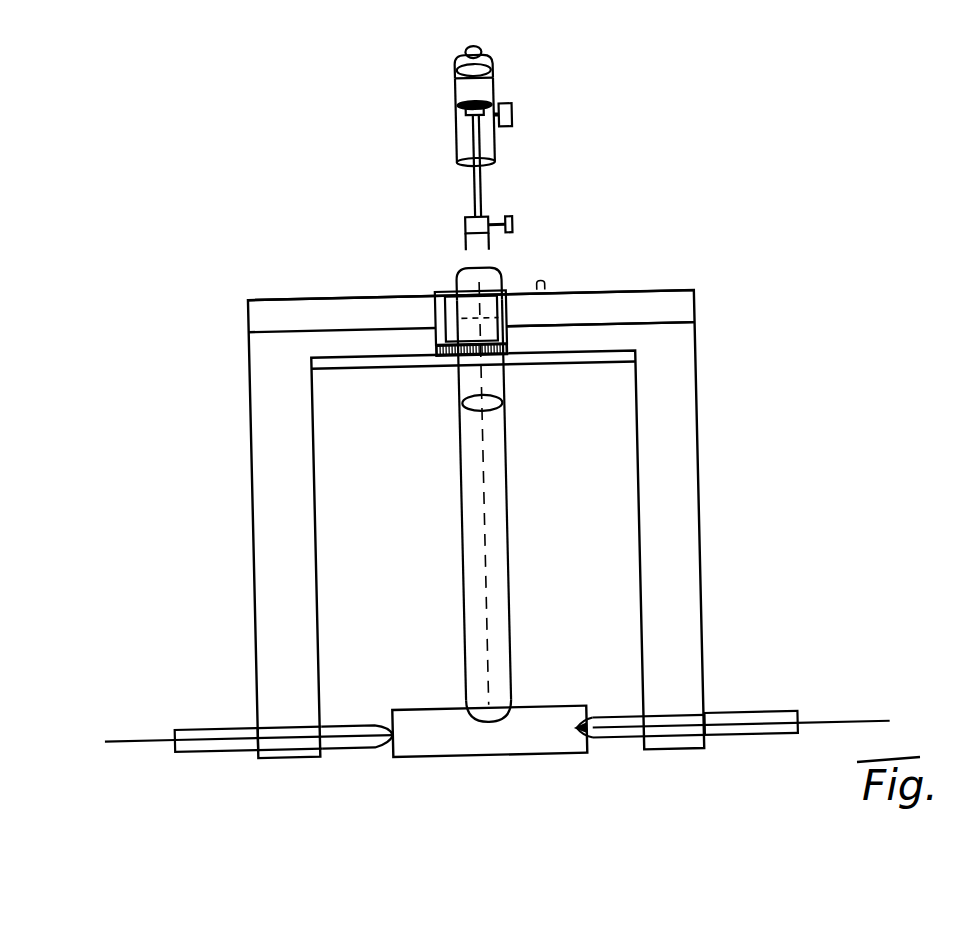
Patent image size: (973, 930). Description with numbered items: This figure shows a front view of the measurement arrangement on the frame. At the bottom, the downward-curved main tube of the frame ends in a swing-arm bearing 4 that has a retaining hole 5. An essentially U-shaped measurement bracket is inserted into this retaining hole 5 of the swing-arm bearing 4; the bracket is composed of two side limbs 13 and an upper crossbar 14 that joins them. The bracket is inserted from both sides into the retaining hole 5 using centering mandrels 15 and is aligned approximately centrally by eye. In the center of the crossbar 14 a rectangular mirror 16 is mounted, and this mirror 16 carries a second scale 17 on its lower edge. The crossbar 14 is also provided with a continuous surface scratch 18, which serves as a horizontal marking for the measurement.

The swing-arm bearing 4 is at (515, 755).
The retaining hole 5 is at (590, 738).
The side limbs 13 is at (272, 550).
The upper crossbar 14 is at (415, 298).
The centering mandrels 15 is at (748, 710).
The rectangular mirror 16 is at (512, 312).
The second scale 17 is at (440, 345).
The continuous surface scratch 18 is at (605, 318).